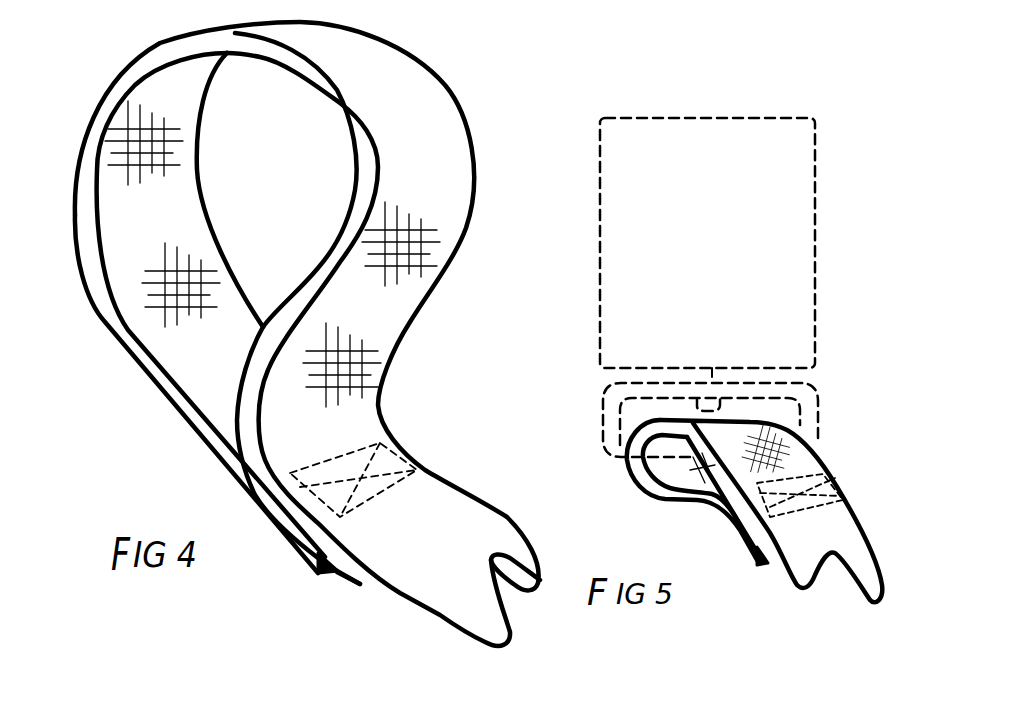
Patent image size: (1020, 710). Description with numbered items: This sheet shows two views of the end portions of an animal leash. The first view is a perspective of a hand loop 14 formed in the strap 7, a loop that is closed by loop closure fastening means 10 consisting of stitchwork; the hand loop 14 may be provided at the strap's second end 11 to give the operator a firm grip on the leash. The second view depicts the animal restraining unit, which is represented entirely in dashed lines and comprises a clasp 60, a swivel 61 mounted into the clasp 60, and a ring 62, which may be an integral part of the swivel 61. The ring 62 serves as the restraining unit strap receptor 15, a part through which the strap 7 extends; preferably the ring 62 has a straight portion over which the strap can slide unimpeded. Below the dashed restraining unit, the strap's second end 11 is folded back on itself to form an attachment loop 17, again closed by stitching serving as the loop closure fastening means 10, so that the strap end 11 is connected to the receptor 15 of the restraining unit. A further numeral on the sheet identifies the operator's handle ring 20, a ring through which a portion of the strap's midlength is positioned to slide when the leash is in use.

In FIG. 4, the strap 7 is at (418, 62).
In FIG. 5, the strap 7 is at (805, 455).
In FIG. 4, the loop closure fastening means 10 is at (383, 418).
In FIG. 5, the loop closure fastening means 10 is at (787, 497).
In FIG. 4, the strap's second end 11 is at (333, 570).
In FIG. 5, the strap's second end 11 is at (770, 568).
In FIG. 4, the hand loop 14 is at (293, 227).
In FIG. 5, the restraining unit strap receptor 15 is at (607, 400).
In FIG. 5, the attachment loop 17 is at (687, 467).
In FIG. 5, the operator's handle ring 20 is at (590, 708).
In FIG. 5, the clasp 60 is at (818, 177).
In FIG. 5, the swivel 61 is at (712, 372).
In FIG. 5, the ring 62 is at (607, 400).